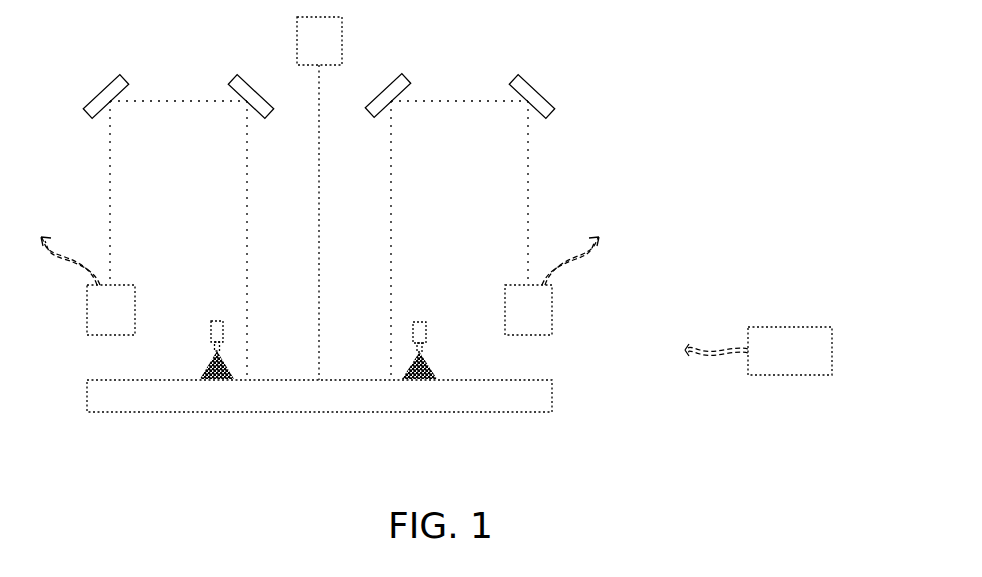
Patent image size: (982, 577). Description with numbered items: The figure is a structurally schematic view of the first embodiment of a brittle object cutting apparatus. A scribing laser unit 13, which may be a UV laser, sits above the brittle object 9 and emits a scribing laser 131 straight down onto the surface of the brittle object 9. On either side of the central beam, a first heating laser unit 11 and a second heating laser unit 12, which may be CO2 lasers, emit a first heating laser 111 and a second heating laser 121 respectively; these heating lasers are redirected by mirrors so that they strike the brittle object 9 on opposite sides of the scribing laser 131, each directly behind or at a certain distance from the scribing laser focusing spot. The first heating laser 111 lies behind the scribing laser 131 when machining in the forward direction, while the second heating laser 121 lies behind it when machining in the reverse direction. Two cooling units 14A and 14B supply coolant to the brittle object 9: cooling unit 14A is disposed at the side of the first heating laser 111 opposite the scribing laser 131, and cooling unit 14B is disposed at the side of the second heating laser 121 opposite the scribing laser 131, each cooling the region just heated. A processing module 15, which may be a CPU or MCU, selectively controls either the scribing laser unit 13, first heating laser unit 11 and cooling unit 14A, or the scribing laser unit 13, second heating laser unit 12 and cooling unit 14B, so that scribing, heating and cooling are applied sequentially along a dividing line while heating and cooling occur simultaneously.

The scribing laser unit 13 is at (342, 20).
The scribing laser 131 is at (320, 170).
The second heating laser 121 is at (244, 166).
The first heating laser 111 is at (392, 214).
The second heating laser unit 12 is at (88, 320).
The first heating laser unit 11 is at (552, 310).
The brittle object 9 is at (530, 400).
The cooling unit 14B is at (214, 321).
The cooling unit 14A is at (417, 322).
The processing module 15 is at (787, 368).